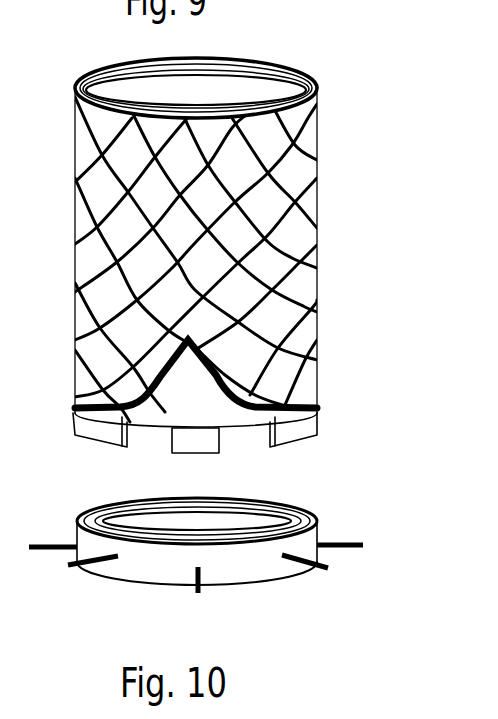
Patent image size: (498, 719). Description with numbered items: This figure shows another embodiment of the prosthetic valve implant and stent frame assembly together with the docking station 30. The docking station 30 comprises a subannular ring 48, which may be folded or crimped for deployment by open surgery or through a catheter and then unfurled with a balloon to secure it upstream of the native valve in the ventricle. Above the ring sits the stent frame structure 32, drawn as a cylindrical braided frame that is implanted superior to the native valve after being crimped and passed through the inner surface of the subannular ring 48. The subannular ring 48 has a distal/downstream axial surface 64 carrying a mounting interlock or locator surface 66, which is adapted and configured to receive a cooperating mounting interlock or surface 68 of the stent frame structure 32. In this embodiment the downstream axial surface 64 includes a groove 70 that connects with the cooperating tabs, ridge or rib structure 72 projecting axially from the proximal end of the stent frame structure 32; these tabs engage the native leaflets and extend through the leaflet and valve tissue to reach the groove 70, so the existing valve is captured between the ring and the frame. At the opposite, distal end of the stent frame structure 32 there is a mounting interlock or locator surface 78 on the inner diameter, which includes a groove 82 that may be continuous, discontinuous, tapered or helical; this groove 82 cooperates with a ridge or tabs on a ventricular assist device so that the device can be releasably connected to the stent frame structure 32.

The docking station 30 is at (245, 588).
The subannular ring 48 is at (245, 588).
The stent frame structure 32 is at (257, 260).
The distal/downstream axial surface 64 is at (269, 521).
The mounting interlock or locator surface 66 is at (269, 521).
The groove 70 is at (200, 535).
The cooperating mounting interlock or surface 68 is at (169, 462).
The tabs, ridge or rib structure 72 is at (120, 450).
The mounting interlock or locator surface 78 is at (245, 59).
The groove 82 is at (243, 58).